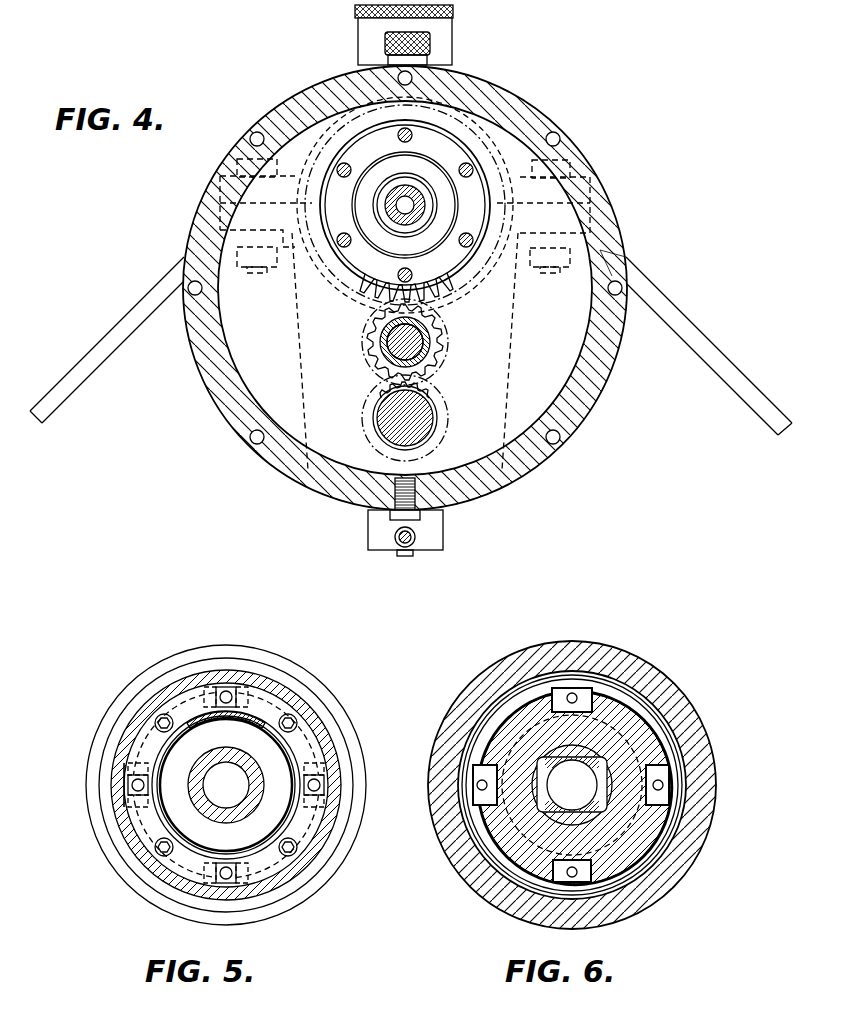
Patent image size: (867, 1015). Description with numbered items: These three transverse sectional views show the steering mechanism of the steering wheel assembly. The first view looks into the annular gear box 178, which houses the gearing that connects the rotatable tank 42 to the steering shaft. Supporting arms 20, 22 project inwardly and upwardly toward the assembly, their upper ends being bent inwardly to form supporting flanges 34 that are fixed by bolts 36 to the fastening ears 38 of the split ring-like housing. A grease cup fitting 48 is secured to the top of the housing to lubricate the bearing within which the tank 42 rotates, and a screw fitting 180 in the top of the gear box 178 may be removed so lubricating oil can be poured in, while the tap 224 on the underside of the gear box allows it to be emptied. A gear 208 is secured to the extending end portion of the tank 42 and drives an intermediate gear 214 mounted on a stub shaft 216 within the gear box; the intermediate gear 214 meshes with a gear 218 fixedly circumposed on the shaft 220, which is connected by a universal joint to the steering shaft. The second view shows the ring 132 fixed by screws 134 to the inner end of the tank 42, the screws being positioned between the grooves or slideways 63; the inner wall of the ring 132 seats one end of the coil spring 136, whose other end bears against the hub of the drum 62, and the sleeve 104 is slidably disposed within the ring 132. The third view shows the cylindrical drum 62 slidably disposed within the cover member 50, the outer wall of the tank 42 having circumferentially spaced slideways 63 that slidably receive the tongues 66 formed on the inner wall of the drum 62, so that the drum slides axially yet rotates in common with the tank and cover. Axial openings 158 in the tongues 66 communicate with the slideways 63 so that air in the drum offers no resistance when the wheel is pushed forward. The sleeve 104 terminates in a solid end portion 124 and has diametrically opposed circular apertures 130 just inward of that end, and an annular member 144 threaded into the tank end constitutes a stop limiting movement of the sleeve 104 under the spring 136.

In FIG. 4, the supporting arm 20 is at (676, 313).
In FIG. 4, the supporting arm 22 is at (84, 383).
In FIG. 4, the supporting flange 34 is at (615, 222).
In FIG. 4, the bolt 36 is at (573, 163).
In FIG. 4, the fastening ear 38 is at (600, 180).
In FIG. 6, the cylindrical tank 42 is at (650, 853).
In FIG. 4, the grease cup fitting 48 is at (455, 10).
In FIG. 5, the cover member 50 is at (302, 672).
In FIG. 6, the cover member 50 is at (710, 743).
In FIG. 5, the cylindrical drum 62 is at (123, 800).
In FIG. 6, the cylindrical drum 62 is at (672, 822).
In FIG. 5, the groove or slideway 63 is at (128, 765).
In FIG. 6, the groove or slideway 63 is at (478, 812).
In FIG. 5, the tongue 66 is at (132, 782).
In FIG. 6, the tongue 66 is at (474, 800).
In FIG. 5, the sleeve 104 is at (262, 765).
In FIG. 6, the sleeve 104 is at (575, 827).
In FIG. 6, the solid end portion 124 is at (572, 762).
In FIG. 6, the circular aperture 130 is at (476, 742).
In FIG. 5, the ring 132 is at (140, 832).
In FIG. 5, the screw 134 is at (160, 848).
In FIG. 5, the coil spring 136 is at (235, 710).
In FIG. 6, the annular member 144 is at (628, 748).
In FIG. 5, the axial opening 158 is at (126, 790).
In FIG. 6, the axial opening 158 is at (476, 783).
In FIG. 4, the gear box 178 is at (533, 104).
In FIG. 4, the screw fitting 180 is at (432, 42).
In FIG. 4, the gear 208 is at (450, 258).
In FIG. 4, the intermediate gear 214 is at (390, 368).
In FIG. 4, the stub shaft 216 is at (400, 335).
In FIG. 4, the gear 218 is at (418, 408).
In FIG. 4, the shaft 220 is at (432, 437).
In FIG. 4, the tap 224 is at (440, 546).